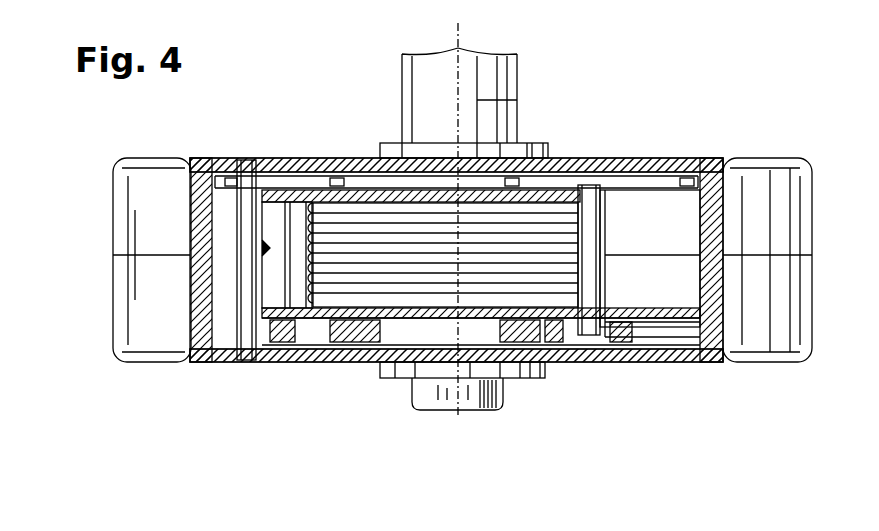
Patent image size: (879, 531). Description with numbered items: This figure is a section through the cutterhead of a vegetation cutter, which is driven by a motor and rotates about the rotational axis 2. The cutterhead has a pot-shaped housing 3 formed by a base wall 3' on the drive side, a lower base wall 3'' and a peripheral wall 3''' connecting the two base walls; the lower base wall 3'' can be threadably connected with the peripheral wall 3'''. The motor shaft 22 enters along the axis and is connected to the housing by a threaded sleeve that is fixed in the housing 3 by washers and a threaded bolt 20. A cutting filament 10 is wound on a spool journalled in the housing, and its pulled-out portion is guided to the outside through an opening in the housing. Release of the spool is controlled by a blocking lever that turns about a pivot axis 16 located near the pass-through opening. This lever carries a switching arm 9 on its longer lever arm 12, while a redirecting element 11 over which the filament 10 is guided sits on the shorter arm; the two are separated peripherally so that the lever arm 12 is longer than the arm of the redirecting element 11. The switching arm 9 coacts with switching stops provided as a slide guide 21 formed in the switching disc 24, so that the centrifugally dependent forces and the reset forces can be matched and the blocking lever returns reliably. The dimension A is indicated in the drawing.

The rotational axis 2 is at (463, 32).
The housing 3 is at (418, 220).
The base wall 3' is at (456, 125).
The lower base wall 3'' is at (456, 394).
The peripheral wall 3''' is at (767, 220).
The switching arm 9 is at (588, 278).
The cutting filament 10 is at (262, 245).
The redirecting element 11 is at (272, 362).
The lever arm 12 is at (348, 160).
The pivot axis 16 is at (246, 160).
The threaded bolt 20 is at (470, 404).
The slide guide 21 is at (354, 335).
The motor shaft 22 is at (500, 102).
The switching disc 24 is at (553, 365).
The gap A is at (282, 257).